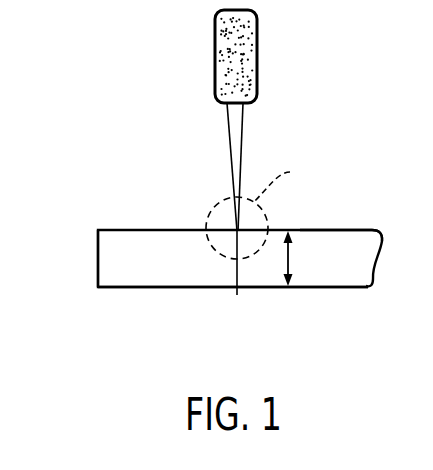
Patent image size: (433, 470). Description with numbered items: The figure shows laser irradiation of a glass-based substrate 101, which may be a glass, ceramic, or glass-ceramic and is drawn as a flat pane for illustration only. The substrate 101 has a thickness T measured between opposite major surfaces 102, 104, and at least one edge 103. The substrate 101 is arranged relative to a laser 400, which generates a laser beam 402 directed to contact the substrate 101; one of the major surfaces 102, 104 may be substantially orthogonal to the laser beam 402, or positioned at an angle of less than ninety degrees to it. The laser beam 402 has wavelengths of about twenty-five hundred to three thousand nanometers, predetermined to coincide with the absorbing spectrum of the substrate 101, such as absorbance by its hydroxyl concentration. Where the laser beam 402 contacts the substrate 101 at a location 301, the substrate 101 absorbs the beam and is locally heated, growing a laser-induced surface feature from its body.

The glass-based substrate 101 is at (318, 272).
The major surface 102 is at (362, 228).
The edge 103 is at (105, 263).
The major surface 104 is at (252, 287).
The location 301 is at (238, 225).
The laser 400 is at (257, 67).
The laser beam 402 is at (237, 128).
The thickness T is at (290, 260).